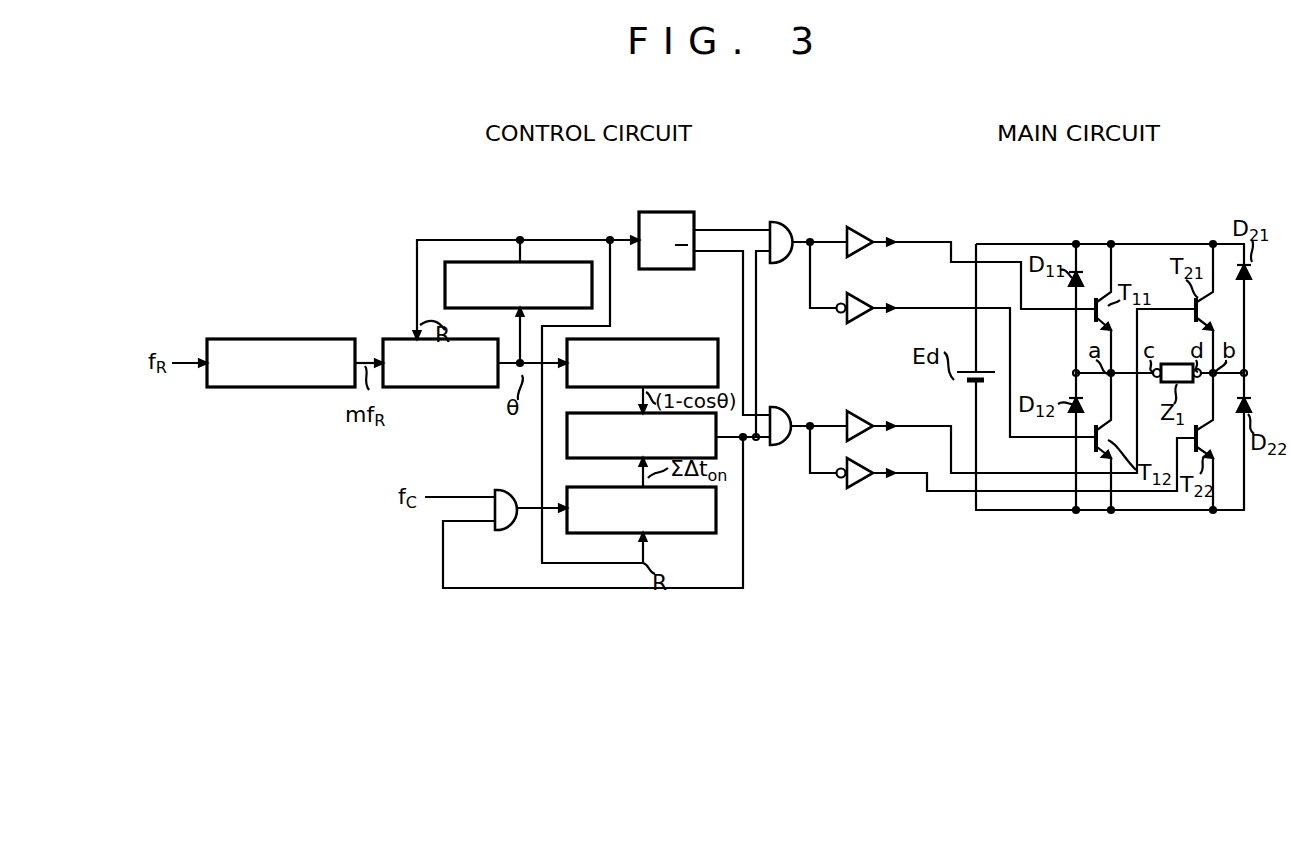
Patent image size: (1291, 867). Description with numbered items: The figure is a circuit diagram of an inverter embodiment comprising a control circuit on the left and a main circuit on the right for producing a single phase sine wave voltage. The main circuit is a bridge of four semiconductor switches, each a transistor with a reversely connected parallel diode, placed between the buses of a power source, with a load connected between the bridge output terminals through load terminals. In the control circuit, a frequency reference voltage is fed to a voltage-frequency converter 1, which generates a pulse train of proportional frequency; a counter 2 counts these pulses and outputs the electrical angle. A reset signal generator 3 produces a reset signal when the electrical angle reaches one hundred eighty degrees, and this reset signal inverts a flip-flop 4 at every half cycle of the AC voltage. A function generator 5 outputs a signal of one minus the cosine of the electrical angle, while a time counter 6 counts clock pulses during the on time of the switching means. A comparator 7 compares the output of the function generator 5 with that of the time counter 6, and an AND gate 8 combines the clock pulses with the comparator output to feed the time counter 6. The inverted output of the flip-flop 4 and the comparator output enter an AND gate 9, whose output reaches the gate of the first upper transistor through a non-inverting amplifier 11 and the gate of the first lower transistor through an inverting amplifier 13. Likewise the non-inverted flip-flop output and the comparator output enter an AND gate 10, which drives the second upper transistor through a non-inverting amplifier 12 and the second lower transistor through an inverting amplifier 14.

The voltage-frequency converter 1 is at (238, 342).
The counter 2 is at (398, 342).
The reset signal generator 3 is at (472, 264).
The flip-flop 4 is at (654, 216).
The function generator 5 is at (678, 344).
The time counter 6 is at (692, 530).
The comparator 7 is at (576, 420).
The AND gate 8 is at (504, 502).
The AND gate 9 is at (784, 236).
The AND gate 10 is at (780, 418).
The non-inverting amplifier 11 is at (860, 238).
The non-inverting amplifier 12 is at (860, 424).
The inverting amplifier 13 is at (860, 312).
The inverting amplifier 14 is at (862, 480).